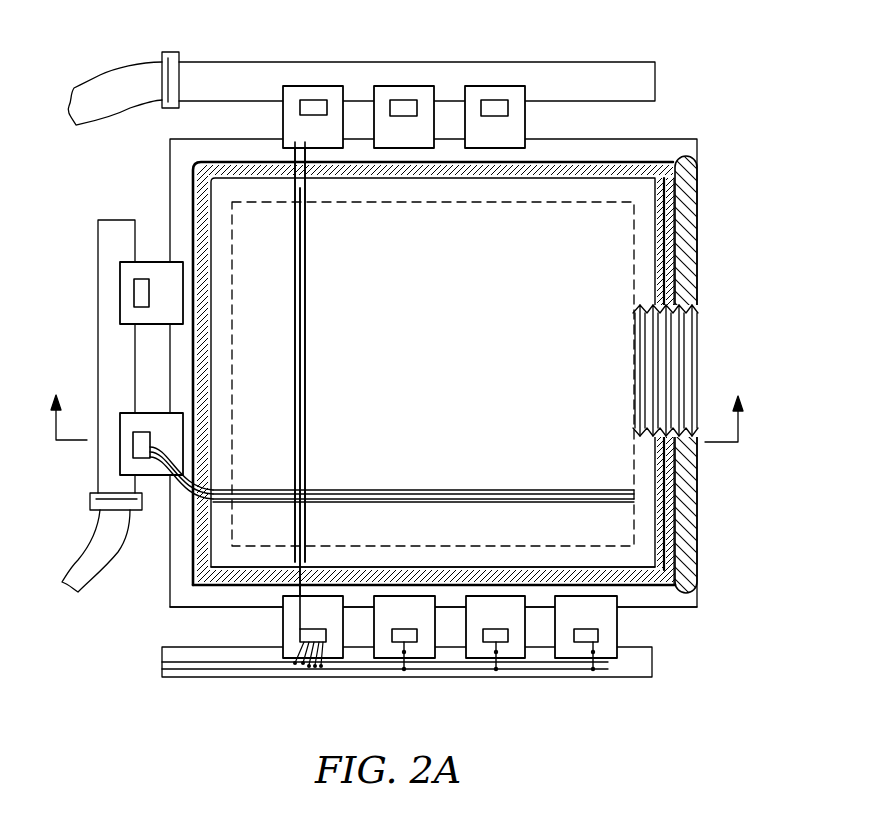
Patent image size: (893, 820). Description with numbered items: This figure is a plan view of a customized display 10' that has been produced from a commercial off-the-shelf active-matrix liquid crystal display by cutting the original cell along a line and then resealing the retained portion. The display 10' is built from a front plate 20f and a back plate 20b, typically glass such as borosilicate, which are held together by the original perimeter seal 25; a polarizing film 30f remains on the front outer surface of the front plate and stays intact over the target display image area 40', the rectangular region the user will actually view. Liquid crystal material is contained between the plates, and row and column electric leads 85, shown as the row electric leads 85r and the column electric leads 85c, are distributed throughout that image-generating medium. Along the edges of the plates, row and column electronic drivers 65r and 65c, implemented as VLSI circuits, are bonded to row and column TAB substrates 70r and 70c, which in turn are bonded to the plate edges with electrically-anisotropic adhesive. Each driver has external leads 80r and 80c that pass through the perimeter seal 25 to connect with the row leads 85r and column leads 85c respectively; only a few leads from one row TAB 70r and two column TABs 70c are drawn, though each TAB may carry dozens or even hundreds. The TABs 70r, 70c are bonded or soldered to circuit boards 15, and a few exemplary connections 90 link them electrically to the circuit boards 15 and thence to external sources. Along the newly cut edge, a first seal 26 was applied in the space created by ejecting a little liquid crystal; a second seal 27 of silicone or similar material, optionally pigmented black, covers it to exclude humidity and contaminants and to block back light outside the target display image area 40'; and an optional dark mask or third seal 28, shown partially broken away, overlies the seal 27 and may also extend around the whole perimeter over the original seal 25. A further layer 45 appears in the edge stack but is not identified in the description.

The customized display 10' is at (392, 370).
The circuit boards 15 is at (221, 77).
The front plate 20f is at (192, 166).
The back plate 20b is at (181, 592).
The perimeter seal 25 is at (627, 168).
The front polarizing film 30f is at (200, 194).
The target display image area 40' is at (676, 381).
The adhesive layer 45 is at (632, 268).
The first seal 26 is at (668, 534).
The second seal 27 is at (686, 484).
The mask or third seal 28 is at (680, 320).
The row and column electric leads 85 is at (657, 241).
The column electric leads 85c is at (307, 378).
The row electric leads 85r is at (427, 488).
The column TAB substrate 70c is at (293, 88).
The column electronic driver 65c is at (313, 103).
The row TAB substrate 70r is at (128, 316).
The row electronic driver 65r is at (140, 290).
The row external leads 80r is at (166, 465).
The column external leads 80c is at (298, 612).
The connections 90 is at (331, 648).